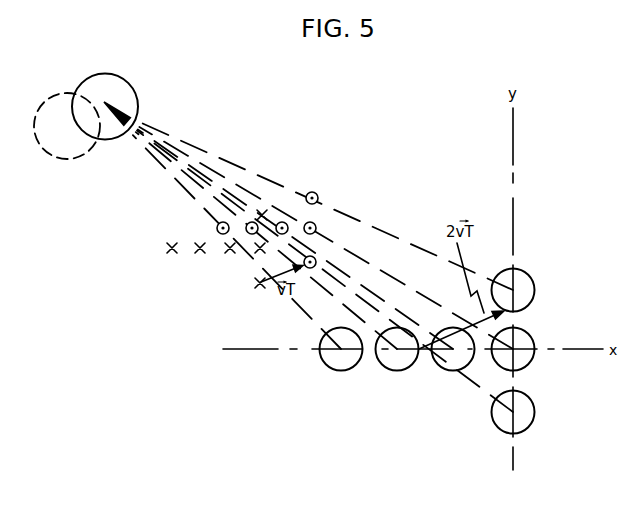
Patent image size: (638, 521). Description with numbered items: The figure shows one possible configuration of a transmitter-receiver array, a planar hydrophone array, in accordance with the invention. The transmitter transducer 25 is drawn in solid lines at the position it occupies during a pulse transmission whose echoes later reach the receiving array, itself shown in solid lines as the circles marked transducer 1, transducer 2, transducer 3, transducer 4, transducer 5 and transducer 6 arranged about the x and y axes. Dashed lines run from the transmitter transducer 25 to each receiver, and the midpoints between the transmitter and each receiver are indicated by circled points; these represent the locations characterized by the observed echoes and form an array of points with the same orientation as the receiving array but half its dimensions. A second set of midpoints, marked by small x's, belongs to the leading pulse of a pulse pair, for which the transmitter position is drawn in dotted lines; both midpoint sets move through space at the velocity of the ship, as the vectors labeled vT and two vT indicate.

The transmitter transducer 25 is at (83, 79).
The transducer 1 is at (521, 290).
The transducer 2 is at (521, 353).
The transducer 3 is at (522, 412).
The transducer 4 is at (453, 364).
The transducer 5 is at (397, 364).
The transducer 6 is at (341, 364).